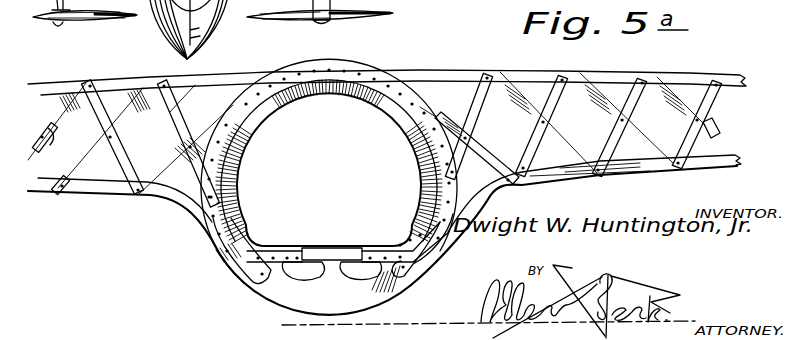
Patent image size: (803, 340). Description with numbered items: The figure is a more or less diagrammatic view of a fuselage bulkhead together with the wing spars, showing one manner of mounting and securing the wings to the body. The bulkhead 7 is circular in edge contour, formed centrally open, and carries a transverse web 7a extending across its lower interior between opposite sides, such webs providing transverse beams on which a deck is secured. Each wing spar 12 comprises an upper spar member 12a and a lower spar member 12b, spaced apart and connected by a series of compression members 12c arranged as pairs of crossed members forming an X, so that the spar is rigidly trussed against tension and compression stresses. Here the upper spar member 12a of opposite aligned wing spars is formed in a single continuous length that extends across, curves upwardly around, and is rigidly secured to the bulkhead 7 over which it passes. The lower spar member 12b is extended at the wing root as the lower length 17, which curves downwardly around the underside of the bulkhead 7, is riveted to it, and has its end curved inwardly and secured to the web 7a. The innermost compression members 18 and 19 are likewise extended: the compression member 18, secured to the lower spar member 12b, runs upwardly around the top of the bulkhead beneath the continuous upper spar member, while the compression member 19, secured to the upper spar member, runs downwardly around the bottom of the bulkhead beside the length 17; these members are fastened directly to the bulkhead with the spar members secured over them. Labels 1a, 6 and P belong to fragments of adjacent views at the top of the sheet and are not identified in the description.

The boat hull 1a is at (196, 60).
The wing strut 6 is at (222, 5).
The plane (wing) P is at (108, 20).
The bulkhead 7 is at (394, 118).
The transverse web 7a is at (318, 252).
The wing spar 12 is at (398, 133).
The upper spar member 12a is at (63, 87).
The lower spar member 12b is at (110, 195).
The compression members 12c is at (74, 178).
The lower length of wing spar 17 is at (200, 213).
The innermost compression member 18 is at (243, 92).
The innermost compression member 19 is at (237, 212).